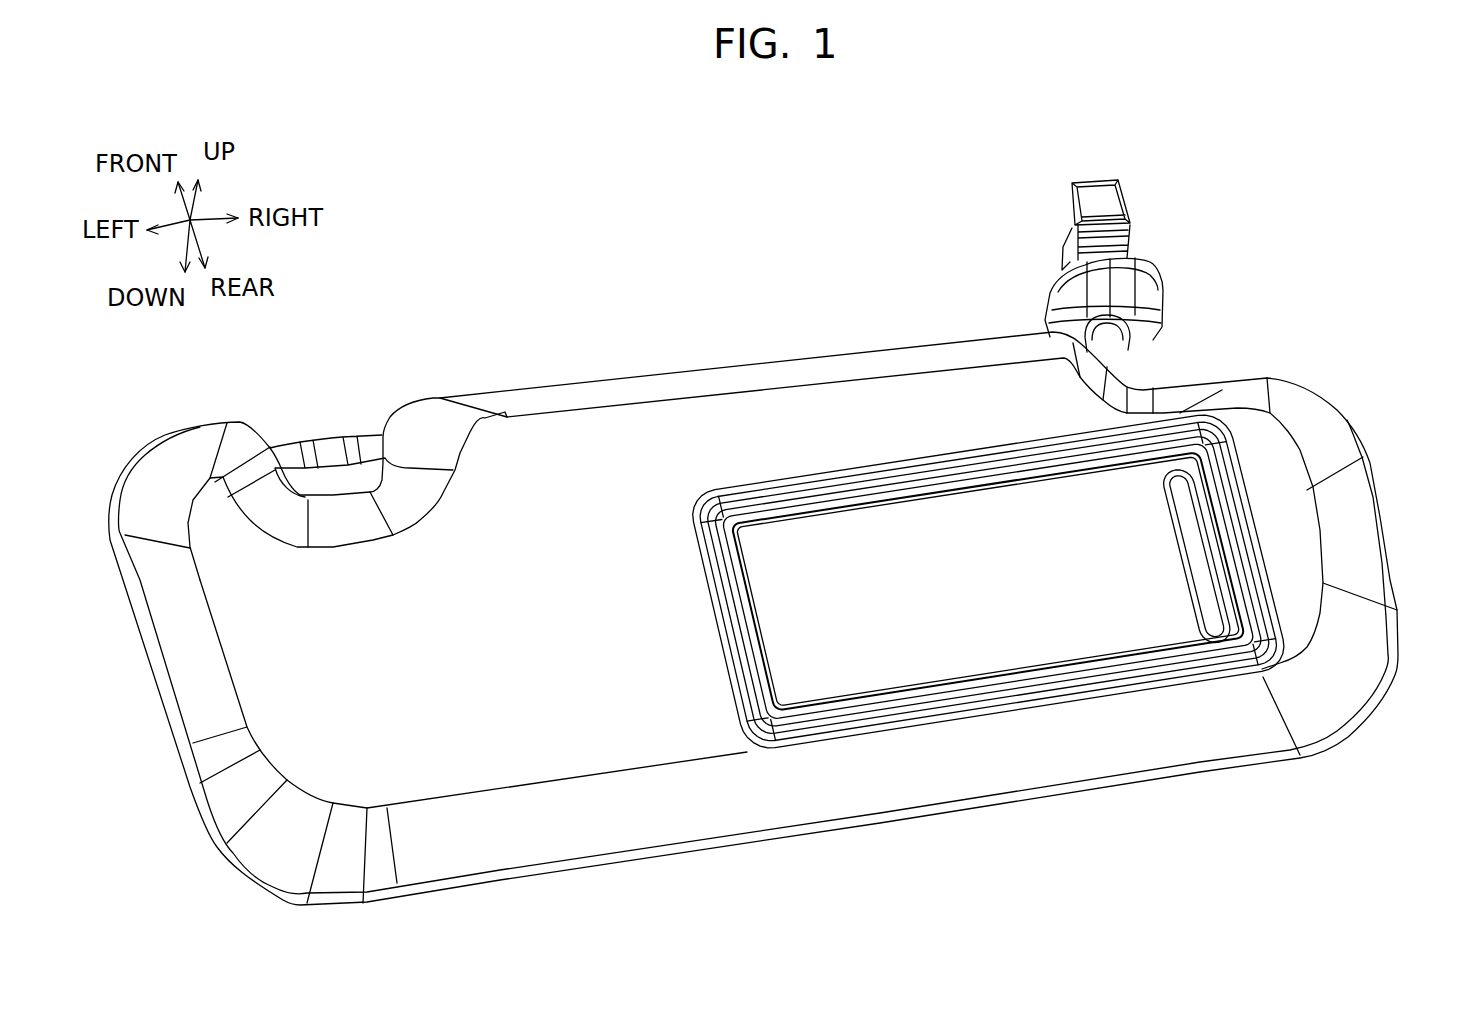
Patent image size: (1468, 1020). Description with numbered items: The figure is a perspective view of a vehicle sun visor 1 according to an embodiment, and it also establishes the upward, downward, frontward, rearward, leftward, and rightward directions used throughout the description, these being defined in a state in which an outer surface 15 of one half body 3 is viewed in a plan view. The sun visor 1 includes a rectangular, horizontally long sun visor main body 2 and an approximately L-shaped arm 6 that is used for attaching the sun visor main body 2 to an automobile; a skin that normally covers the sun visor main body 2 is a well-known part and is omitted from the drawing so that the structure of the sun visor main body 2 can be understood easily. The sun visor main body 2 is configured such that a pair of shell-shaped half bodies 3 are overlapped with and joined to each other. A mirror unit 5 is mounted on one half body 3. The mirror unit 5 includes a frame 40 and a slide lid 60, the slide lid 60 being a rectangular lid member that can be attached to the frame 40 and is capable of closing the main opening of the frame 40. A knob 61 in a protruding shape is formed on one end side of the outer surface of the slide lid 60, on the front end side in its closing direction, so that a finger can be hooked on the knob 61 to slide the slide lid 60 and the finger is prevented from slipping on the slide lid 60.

The sun visor 1 is at (621, 193).
The sun visor main body 2 is at (824, 300).
The half body 3 is at (661, 350).
The outer surface 15 is at (542, 455).
The arm 6 is at (1150, 350).
The mirror unit 5 is at (1050, 731).
The frame 40 is at (1136, 695).
The slide lid 60 is at (942, 640).
The knob 61 is at (1197, 567).